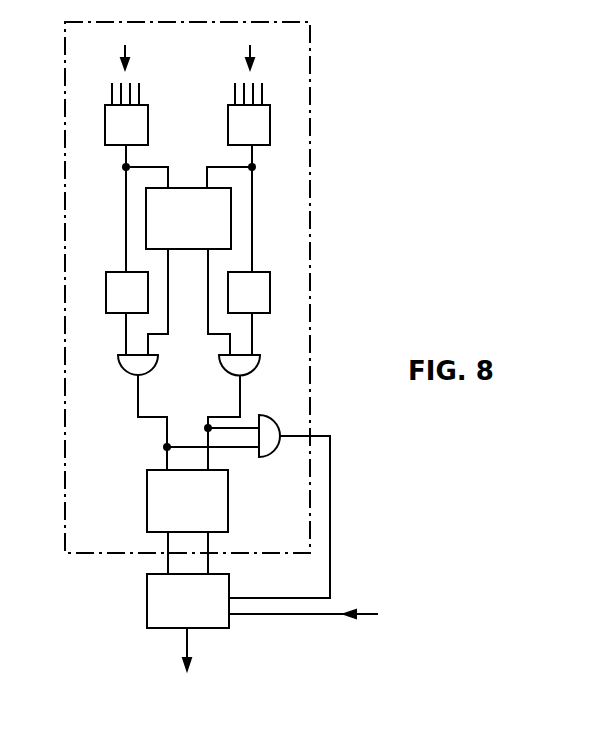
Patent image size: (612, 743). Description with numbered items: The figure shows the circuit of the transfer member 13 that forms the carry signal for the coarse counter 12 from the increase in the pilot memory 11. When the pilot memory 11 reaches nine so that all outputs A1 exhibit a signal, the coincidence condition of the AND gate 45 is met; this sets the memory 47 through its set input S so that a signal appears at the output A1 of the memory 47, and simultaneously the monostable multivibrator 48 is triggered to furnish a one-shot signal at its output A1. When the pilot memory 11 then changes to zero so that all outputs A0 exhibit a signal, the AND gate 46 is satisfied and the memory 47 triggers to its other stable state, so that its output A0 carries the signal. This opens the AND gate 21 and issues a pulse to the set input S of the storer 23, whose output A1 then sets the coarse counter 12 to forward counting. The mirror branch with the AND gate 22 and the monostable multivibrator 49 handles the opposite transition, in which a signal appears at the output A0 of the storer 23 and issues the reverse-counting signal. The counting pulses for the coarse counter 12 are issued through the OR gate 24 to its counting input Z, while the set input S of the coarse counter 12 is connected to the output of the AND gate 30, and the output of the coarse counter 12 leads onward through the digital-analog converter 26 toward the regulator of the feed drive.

The pilot memory 11 is at (183, 57).
The coarse counter 12 is at (147, 601).
The transfer member 13 is at (310, 96).
The AND gate 21 is at (120, 367).
The AND gate 22 is at (260, 370).
The storer 23 is at (147, 497).
The OR gate 24 is at (276, 452).
The digital-analog converter 26 is at (187, 660).
The AND gate 30 is at (317, 614).
The AND gate 45 is at (148, 136).
The AND gate 46 is at (228, 127).
The memory 47 is at (228, 218).
The monostable multivibrator 48 is at (106, 288).
The monostable multivibrator 49 is at (270, 297).